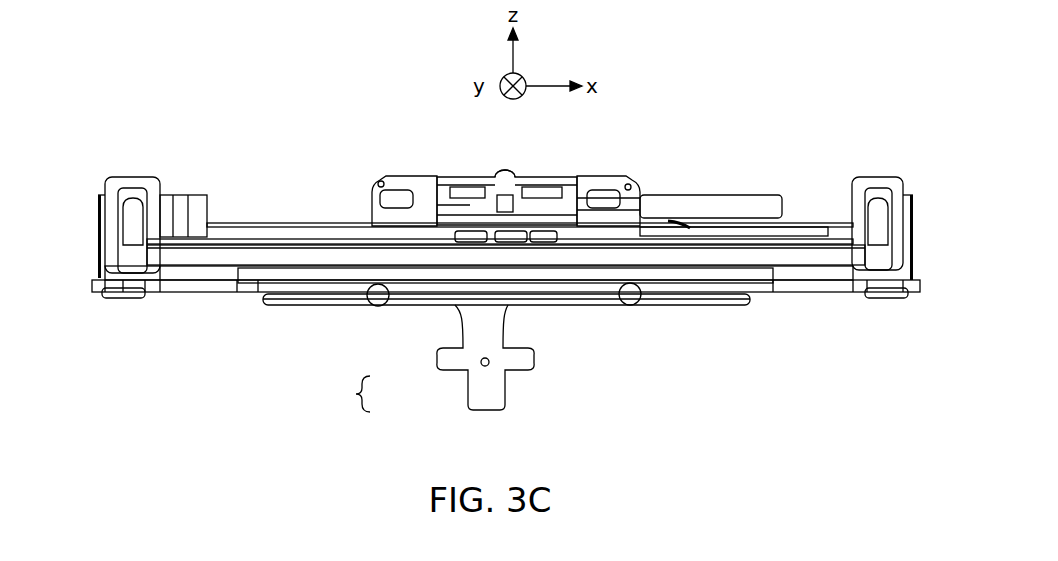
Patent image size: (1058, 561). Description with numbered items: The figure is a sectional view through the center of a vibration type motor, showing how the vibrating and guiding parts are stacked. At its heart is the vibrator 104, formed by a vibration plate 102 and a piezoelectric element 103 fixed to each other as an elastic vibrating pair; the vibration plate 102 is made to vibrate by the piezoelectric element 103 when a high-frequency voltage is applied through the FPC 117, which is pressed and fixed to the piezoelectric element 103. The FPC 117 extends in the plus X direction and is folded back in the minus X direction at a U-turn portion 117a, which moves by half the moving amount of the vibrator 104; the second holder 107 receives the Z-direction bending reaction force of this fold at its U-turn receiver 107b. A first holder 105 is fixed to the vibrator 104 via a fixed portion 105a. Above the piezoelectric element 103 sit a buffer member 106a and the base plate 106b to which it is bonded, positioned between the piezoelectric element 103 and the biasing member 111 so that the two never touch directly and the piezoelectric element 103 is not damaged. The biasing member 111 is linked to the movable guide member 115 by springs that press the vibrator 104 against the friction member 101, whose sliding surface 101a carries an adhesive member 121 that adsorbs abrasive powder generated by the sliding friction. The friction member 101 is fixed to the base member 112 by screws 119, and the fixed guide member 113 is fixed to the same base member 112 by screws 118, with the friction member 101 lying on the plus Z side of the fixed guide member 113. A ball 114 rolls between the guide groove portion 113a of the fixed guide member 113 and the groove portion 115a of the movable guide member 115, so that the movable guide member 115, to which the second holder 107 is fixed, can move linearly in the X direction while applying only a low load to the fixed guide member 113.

The friction member 101 is at (193, 253).
The sliding surface 101a is at (217, 248).
The vibration plate 102 is at (485, 232).
The piezoelectric element 103 is at (457, 224).
The vibrator 104 is at (344, 394).
The first holder 105 is at (584, 198).
The fixed portion 105a is at (398, 230).
The buffer member 106a is at (465, 208).
The base plate 106b is at (443, 200).
The second holder 107 is at (617, 198).
The U-turn receiver 107b is at (757, 207).
The biasing member 111 is at (527, 181).
The base member 112 is at (178, 212).
The fixed guide member 113 is at (220, 285).
The guide groove portion 113a is at (257, 278).
The ball 114 is at (377, 297).
The movable guide member 115 is at (270, 300).
The groove portion 115a is at (323, 300).
The FPC 117 is at (487, 332).
The U-turn portion 117a is at (690, 228).
The screws 118 is at (123, 297).
The screws 119 is at (132, 250).
The adhesive member 121 is at (248, 240).